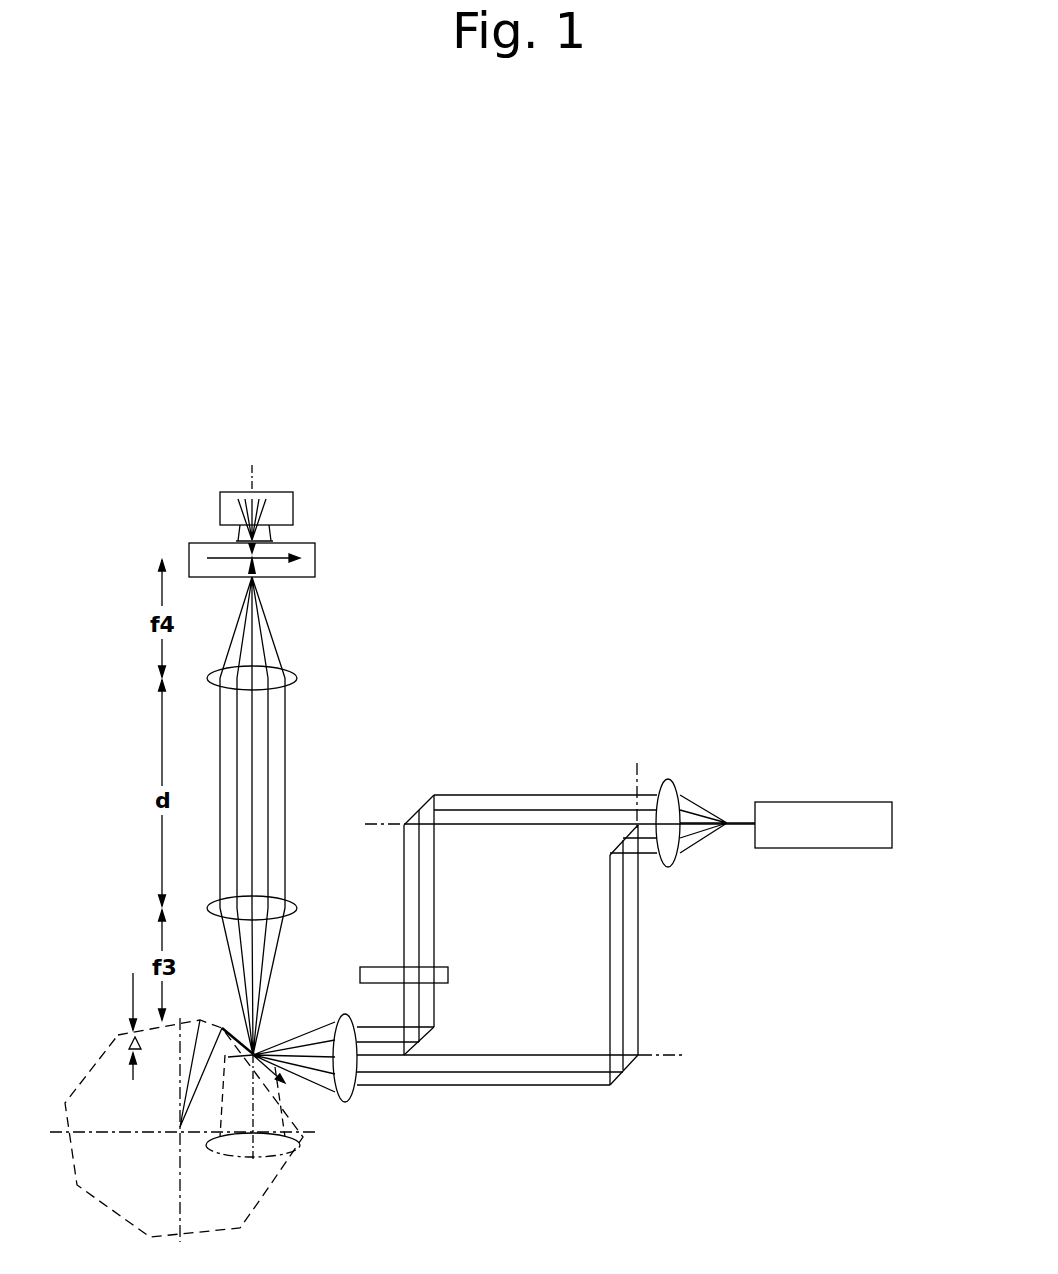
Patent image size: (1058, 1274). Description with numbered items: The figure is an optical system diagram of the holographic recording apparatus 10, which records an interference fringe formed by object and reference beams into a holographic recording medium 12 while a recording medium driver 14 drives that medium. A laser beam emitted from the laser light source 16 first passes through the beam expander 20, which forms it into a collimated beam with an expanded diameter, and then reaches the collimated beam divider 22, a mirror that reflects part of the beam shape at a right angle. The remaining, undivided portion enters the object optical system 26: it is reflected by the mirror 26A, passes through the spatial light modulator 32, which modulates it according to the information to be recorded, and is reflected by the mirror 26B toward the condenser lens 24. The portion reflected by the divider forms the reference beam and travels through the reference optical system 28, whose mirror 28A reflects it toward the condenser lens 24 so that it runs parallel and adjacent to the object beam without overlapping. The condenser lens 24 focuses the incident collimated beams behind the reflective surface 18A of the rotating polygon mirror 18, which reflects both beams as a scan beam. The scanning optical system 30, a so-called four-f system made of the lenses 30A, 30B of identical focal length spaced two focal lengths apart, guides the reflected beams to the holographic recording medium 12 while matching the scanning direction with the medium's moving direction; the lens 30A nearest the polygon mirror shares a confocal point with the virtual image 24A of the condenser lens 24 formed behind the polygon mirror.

The holographic recording apparatus 10 is at (452, 573).
The holographic recording medium 12 is at (315, 560).
The recording medium driver 14 is at (293, 507).
The laser light source 16 is at (850, 802).
The polygon mirror 18 is at (205, 1113).
The reflective surface 18A is at (238, 1038).
The beam expander 20 is at (672, 786).
The collimated beam divider 22 is at (610, 850).
The condenser lens 24 is at (352, 1098).
The virtual image of the condenser lens 24A is at (300, 1145).
The object optical system 26 is at (488, 907).
The mirror 26A is at (410, 805).
The mirror 26B is at (432, 1028).
The reference optical system 28 is at (652, 964).
The mirror 28A is at (620, 1080).
The scanning optical system 30 is at (304, 792).
The lens 30A is at (277, 893).
The lens 30B is at (298, 686).
The spatial light modulator 32 is at (450, 973).